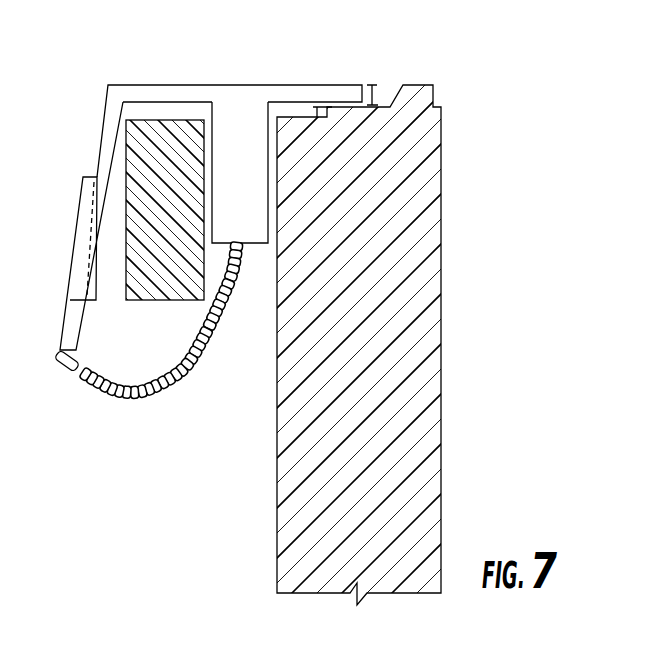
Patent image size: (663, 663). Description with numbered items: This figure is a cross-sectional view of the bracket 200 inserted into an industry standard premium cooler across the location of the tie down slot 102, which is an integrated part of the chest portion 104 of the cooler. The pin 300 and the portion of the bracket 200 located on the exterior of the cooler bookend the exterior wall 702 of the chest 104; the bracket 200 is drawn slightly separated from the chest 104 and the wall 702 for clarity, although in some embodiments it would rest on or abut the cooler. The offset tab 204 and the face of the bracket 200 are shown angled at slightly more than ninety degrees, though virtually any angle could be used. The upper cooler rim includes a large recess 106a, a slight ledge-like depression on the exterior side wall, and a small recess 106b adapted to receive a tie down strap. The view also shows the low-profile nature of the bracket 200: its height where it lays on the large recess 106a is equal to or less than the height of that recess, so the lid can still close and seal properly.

The bracket 200 is at (193, 81).
The tie down slot 102 is at (269, 101).
The chest portion 104 is at (275, 515).
The large recess 106a is at (382, 96).
The small recess 106b is at (311, 108).
The offset tab 204 is at (67, 315).
The pin 300 is at (256, 243).
The exterior wall 702 is at (172, 308).